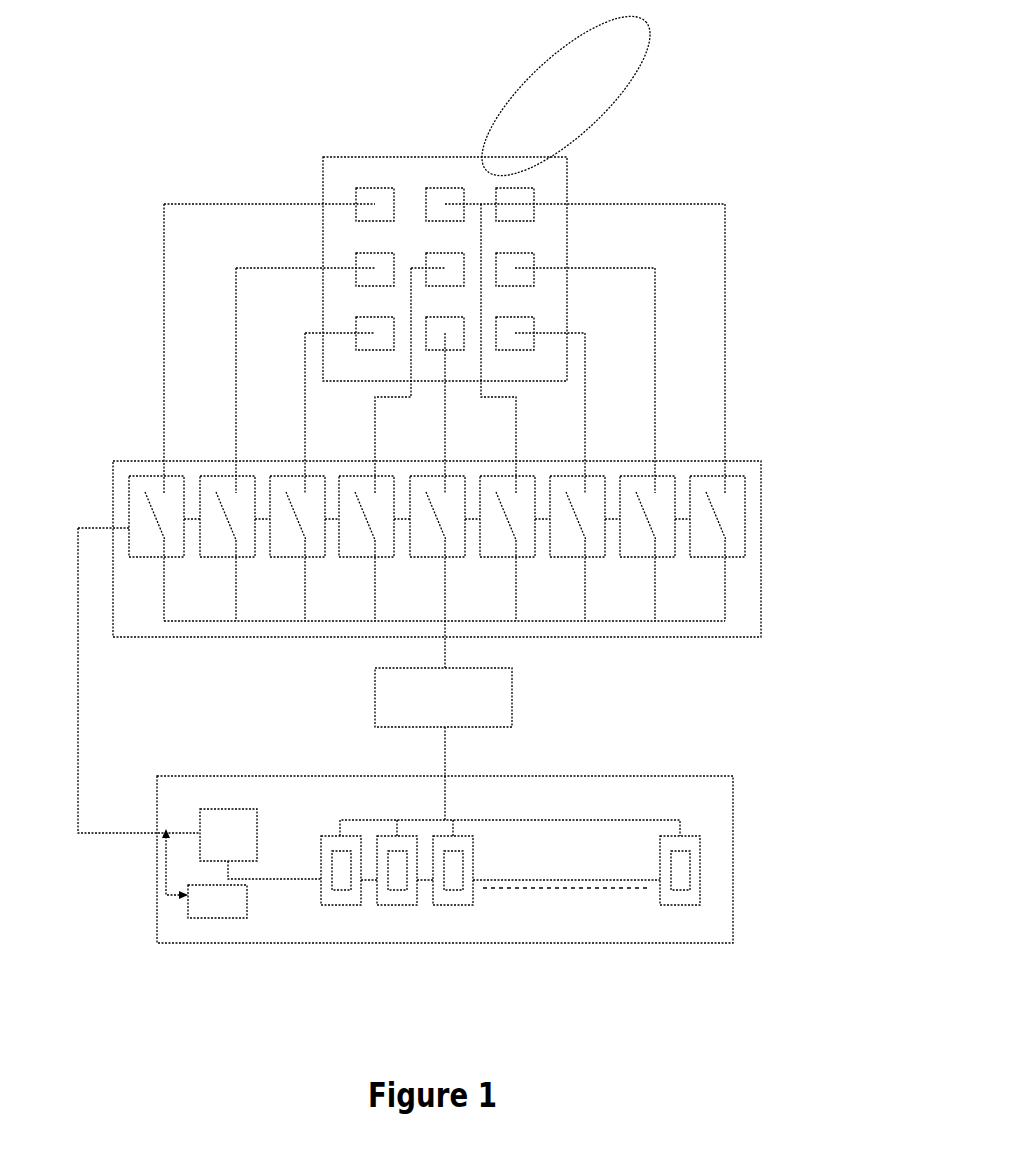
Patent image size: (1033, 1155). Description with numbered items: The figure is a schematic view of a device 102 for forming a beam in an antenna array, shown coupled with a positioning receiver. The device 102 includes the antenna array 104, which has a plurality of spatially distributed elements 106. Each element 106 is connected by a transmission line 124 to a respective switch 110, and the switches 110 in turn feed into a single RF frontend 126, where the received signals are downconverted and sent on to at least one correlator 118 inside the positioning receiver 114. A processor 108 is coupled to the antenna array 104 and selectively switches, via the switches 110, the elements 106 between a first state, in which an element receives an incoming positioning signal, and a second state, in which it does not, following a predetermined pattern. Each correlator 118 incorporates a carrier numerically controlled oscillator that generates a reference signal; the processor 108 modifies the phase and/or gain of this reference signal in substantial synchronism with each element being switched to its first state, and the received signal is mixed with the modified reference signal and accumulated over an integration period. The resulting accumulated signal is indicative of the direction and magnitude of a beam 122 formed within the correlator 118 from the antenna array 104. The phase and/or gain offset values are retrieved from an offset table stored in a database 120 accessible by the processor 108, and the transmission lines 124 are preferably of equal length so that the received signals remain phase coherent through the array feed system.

The device 102 is at (185, 170).
The antenna array 104 is at (322, 188).
The elements 106 is at (375, 188).
The processor 108 is at (238, 809).
The switches 110 is at (145, 475).
The positioning receiver 114 is at (677, 776).
The correlator 118 is at (338, 850).
The database 120 is at (227, 918).
The beam 122 is at (600, 113).
The transmission line 124 is at (760, 313).
The RF frontend 126 is at (512, 703).